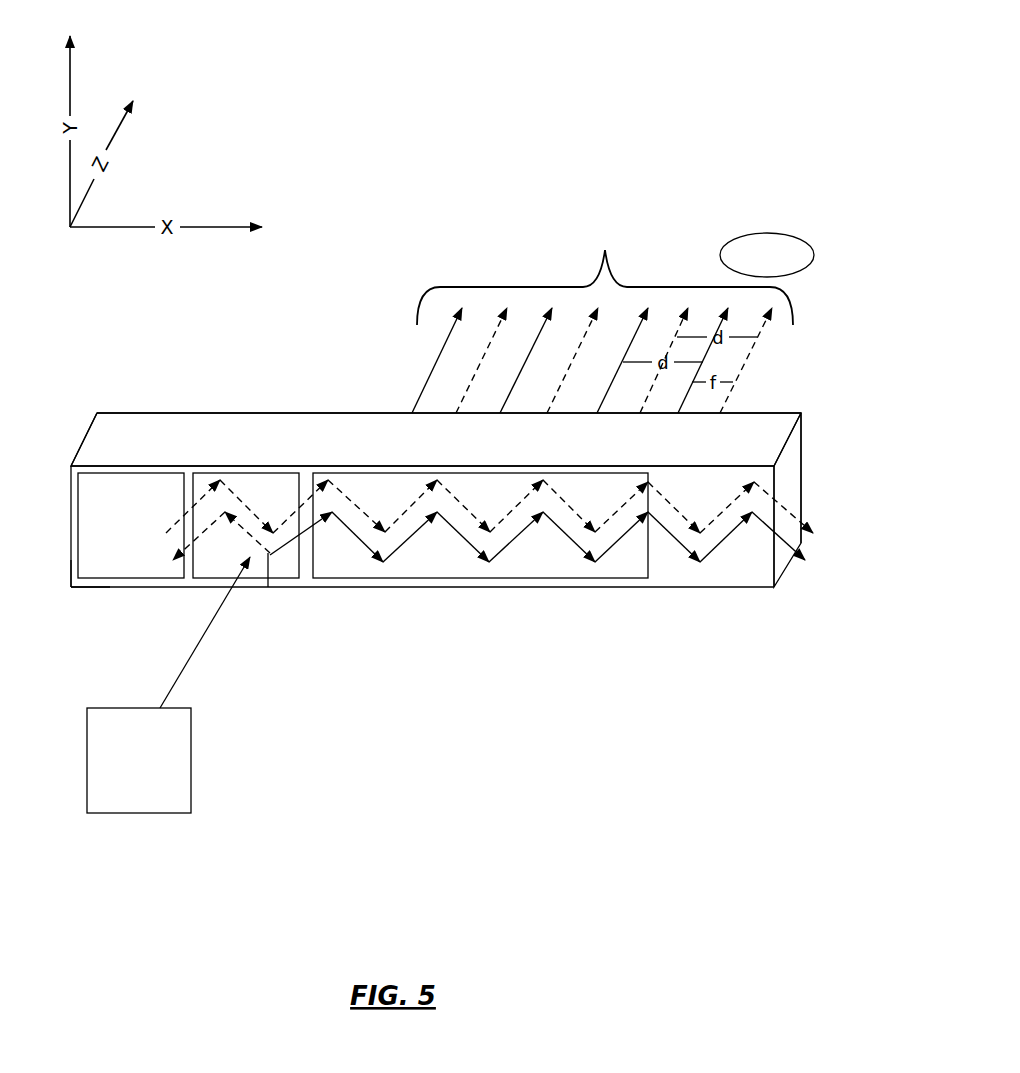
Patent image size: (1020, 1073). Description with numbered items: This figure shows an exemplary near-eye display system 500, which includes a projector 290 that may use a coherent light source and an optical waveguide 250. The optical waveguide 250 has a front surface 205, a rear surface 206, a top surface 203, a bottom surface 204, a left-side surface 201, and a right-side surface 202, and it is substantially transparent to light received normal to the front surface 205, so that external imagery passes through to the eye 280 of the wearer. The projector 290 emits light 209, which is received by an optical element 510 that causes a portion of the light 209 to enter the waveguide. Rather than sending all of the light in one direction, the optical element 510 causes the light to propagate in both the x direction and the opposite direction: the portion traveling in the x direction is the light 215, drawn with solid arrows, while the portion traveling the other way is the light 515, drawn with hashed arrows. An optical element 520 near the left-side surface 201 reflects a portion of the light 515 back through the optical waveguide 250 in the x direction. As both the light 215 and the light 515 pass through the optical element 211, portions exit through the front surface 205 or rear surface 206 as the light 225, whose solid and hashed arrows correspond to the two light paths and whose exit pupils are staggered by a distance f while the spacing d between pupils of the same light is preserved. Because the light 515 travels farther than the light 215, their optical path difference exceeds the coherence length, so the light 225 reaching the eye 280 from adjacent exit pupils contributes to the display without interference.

The left-side surface 201 is at (71, 466).
The right-side surface 202 is at (794, 440).
The top surface 203 is at (249, 430).
The bottom surface 204 is at (597, 588).
The front surface 205 is at (82, 587).
The rear surface 206 is at (173, 413).
The light 209 is at (185, 666).
The optical element 211 is at (480, 526).
The light 215 is at (411, 537).
The light 225 is at (602, 316).
The optical waveguide 250 is at (777, 519).
The eye 280 is at (767, 255).
The projector 290 is at (139, 760).
The near-eye display system 500 is at (392, 897).
The optical element 510 is at (246, 526).
The light 515 is at (268, 587).
The optical element 520 is at (131, 526).